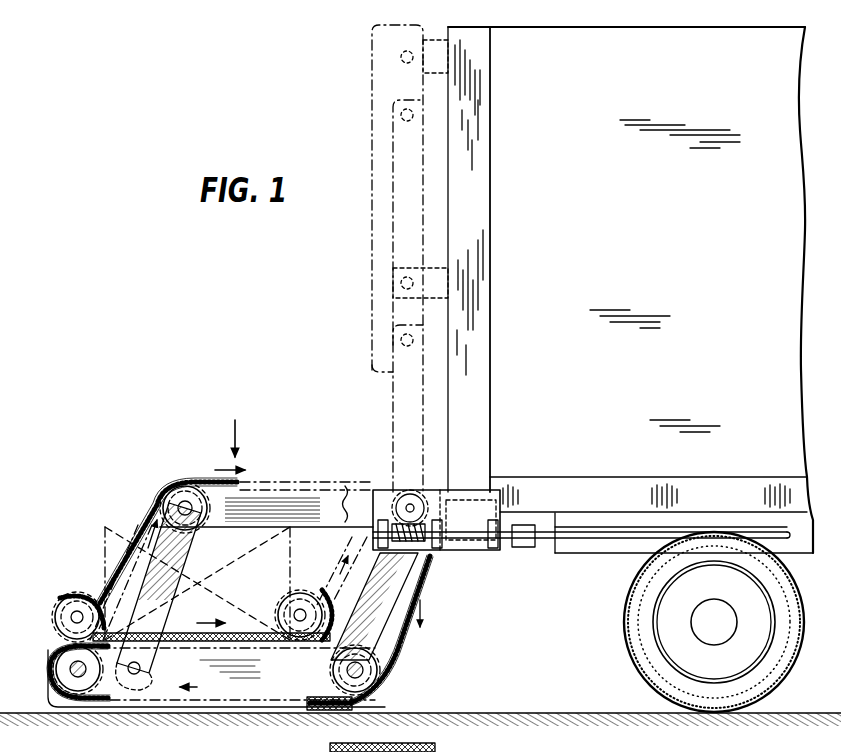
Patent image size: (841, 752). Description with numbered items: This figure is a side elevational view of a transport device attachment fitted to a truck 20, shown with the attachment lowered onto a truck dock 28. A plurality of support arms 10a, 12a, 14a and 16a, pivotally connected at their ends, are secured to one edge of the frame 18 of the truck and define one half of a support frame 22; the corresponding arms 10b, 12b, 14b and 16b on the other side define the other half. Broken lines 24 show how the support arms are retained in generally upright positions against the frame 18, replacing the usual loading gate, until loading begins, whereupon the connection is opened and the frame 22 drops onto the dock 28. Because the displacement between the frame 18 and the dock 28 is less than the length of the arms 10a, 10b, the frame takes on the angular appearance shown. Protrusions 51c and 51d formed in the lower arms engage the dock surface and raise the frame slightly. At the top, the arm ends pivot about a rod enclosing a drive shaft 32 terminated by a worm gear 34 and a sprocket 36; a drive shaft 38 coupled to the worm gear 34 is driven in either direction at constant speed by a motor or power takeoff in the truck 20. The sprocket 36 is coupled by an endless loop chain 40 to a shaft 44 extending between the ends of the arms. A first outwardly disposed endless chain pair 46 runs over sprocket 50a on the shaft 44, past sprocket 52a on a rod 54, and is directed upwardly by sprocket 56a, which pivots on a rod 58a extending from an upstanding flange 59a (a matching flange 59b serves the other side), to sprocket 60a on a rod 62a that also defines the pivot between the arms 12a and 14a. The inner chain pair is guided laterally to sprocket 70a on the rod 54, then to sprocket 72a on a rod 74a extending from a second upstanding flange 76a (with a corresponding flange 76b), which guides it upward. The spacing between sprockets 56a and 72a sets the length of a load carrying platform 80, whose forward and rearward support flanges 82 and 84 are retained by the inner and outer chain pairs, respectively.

The support arm 10a is at (477, 588).
The support arm 10b is at (378, 622).
The support arm 12a is at (355, 505).
The support arm 12b is at (273, 500).
The support arm 14a is at (410, 192).
The support arm 14b is at (165, 545).
The support arm 16a is at (385, 140).
The support arm 16b is at (210, 705).
The frame 18 is at (500, 500).
The truck 20 is at (684, 243).
The support frame 22 is at (232, 429).
The broken lines 24 is at (372, 80).
The truck dock 28 is at (573, 712).
The drive shaft 32 is at (392, 498).
The worm gear 34 is at (434, 498).
The sprocket 36 is at (503, 740).
The drive shaft 38 is at (468, 538).
The endless loop chain 40 is at (402, 737).
The shaft 44 is at (368, 673).
The first outwardly disposed endless chain pair 46 is at (200, 482).
The sprocket 50a is at (375, 653).
The protrusion 51c is at (95, 706).
The protrusion 51d is at (386, 713).
The sprocket 52a is at (62, 680).
The rod 54 is at (142, 668).
The sprocket 56a is at (82, 596).
The rod 58a is at (70, 597).
The upstanding flange 59a is at (62, 599).
The upstanding flange 59b is at (436, 57).
The sprocket 60a is at (176, 500).
The rod 62a is at (185, 500).
The sprocket 70a is at (65, 687).
The sprocket 72a is at (292, 600).
The rod 74a is at (302, 610).
The upstanding flange 76a is at (287, 602).
The upstanding flange 76b is at (436, 283).
The platform 80 is at (187, 633).
The forward support flange 82 is at (215, 670).
The rearward support flange 84 is at (80, 628).